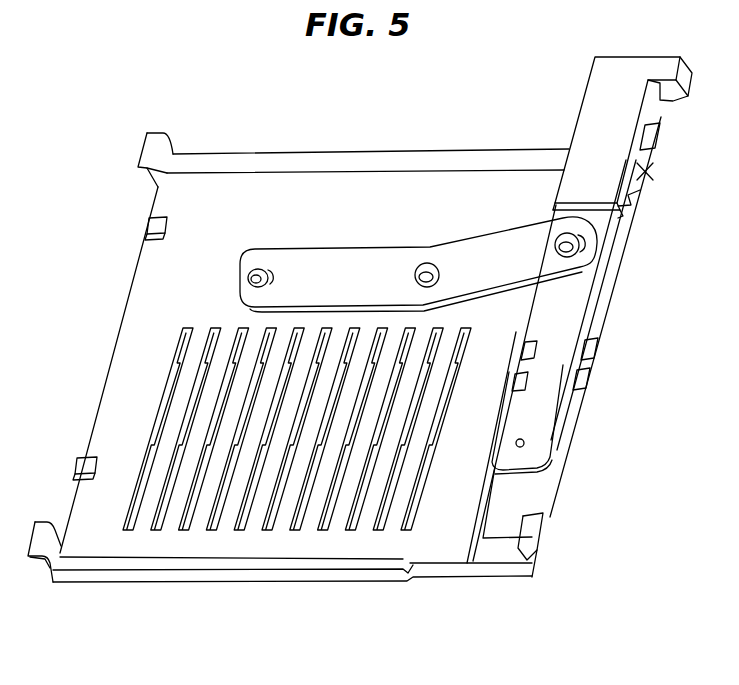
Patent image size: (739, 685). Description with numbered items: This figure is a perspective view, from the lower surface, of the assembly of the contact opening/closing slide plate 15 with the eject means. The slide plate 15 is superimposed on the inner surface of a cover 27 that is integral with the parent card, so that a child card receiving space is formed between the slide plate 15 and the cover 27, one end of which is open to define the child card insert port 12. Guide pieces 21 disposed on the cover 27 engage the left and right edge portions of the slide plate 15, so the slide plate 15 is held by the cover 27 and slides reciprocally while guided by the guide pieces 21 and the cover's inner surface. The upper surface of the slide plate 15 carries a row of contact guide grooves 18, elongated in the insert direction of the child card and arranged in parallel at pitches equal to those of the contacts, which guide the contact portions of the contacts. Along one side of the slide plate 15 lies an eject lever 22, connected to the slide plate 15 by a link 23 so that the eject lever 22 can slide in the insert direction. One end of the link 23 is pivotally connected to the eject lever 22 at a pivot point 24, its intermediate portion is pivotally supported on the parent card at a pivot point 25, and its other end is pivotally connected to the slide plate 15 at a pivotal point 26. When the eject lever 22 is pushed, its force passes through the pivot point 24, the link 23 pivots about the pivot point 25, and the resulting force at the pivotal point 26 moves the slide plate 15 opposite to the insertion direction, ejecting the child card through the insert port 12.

The child card insert port 12 is at (345, 152).
The contact opening/closing slide plate 15 is at (292, 207).
The contact guide grooves 18 is at (375, 508).
The guide pieces 21 is at (148, 222).
The eject lever 22 is at (572, 306).
The link 23 is at (473, 262).
The pivot point 24 is at (550, 233).
The pivot point 25 is at (422, 262).
The pivotal point 26 is at (250, 263).
The cover 27 is at (535, 488).